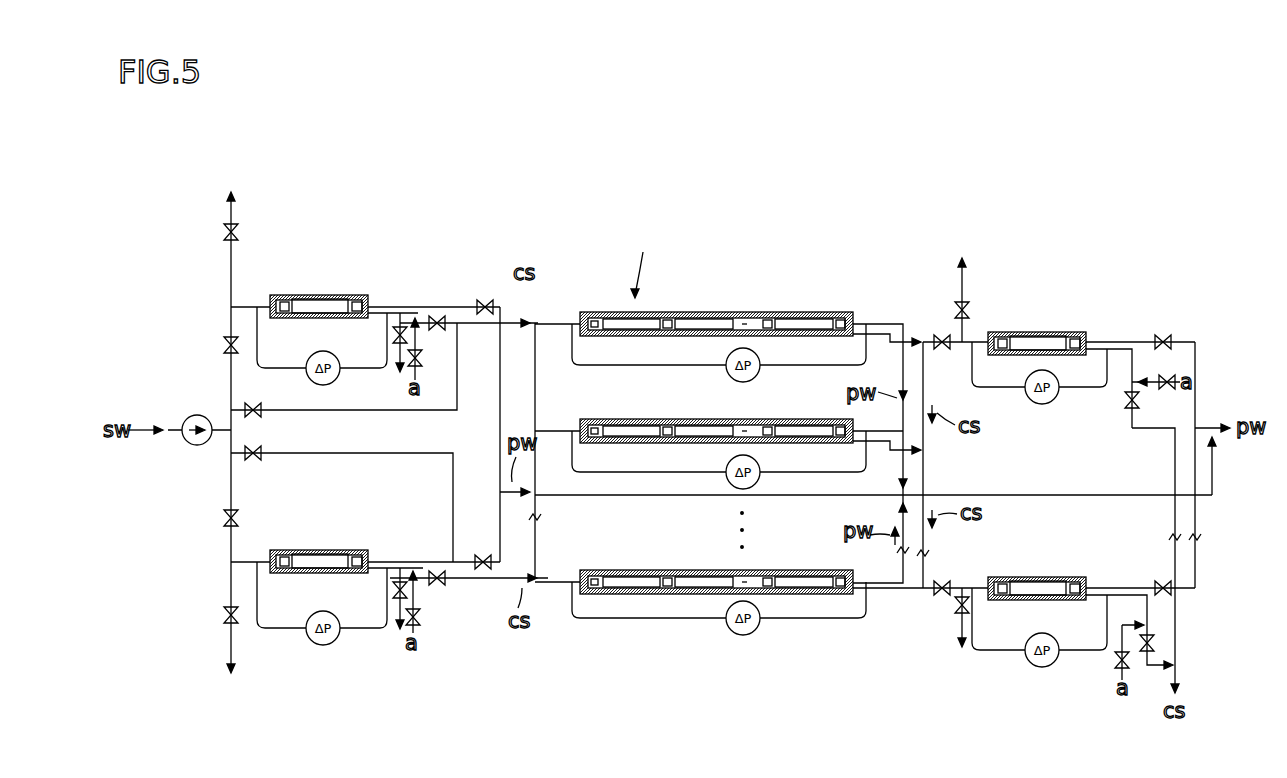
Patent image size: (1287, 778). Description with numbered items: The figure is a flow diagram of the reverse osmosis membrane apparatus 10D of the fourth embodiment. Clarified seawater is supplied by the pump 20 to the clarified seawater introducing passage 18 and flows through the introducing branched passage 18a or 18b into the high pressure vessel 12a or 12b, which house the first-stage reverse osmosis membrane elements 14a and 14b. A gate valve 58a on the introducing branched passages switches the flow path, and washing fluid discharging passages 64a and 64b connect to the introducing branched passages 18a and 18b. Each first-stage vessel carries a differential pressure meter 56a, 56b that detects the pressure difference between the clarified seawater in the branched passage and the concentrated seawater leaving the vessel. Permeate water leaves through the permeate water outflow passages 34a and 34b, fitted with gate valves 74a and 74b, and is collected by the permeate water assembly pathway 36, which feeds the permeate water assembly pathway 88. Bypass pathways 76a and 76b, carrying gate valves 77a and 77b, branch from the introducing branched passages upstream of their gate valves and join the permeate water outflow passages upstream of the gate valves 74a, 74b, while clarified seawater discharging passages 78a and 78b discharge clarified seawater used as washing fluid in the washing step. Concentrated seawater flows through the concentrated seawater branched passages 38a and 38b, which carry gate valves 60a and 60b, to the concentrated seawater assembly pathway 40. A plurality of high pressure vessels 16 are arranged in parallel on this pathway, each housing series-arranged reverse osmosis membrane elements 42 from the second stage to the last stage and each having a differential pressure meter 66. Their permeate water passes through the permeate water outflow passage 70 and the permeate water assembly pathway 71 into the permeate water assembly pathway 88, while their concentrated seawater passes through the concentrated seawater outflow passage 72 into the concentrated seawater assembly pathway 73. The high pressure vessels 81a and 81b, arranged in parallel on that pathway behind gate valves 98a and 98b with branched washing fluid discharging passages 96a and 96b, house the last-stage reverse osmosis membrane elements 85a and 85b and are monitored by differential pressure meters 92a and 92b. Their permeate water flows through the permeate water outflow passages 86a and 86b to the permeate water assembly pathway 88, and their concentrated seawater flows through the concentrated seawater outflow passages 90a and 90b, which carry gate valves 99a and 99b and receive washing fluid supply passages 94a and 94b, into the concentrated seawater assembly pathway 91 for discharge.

The reverse osmosis membrane apparatus 10D is at (645, 263).
The high pressure vessel 12a is at (319, 280).
The high pressure vessel 12b is at (319, 533).
The first-stage reverse osmosis membrane element 14a is at (326, 296).
The first-stage reverse osmosis membrane element 14b is at (326, 554).
The high pressure vessel 16 is at (780, 316).
The clarified seawater introducing passage 18 is at (228, 422).
The introducing branched passage 18a is at (242, 302).
The introducing branched passage 18b is at (245, 558).
The pump 20 is at (186, 419).
The permeate water outflow passage 34a is at (498, 398).
The permeate water outflow passage 34b is at (498, 523).
The permeate water assembly pathway 36 is at (658, 493).
The concentrated seawater branched passage 38a is at (402, 314).
The concentrated seawater branched passage 38b is at (470, 600).
The concentrated seawater assembly pathway 40 is at (541, 405).
The reverse osmosis membrane element 42 is at (694, 433).
The differential pressure meter 56a is at (310, 358).
The differential pressure meter 56b is at (310, 618).
The gate valve 58a is at (223, 350).
The gate valve 60a is at (437, 315).
The gate valve 60b is at (437, 586).
The washing fluid discharging passage 64a is at (228, 277).
The washing fluid discharging passage 64b is at (228, 592).
The differential pressure meter 66 is at (722, 358).
The permeate water outflow passage 70 is at (878, 318).
The permeate water assembly pathway 71 is at (900, 465).
The concentrated seawater outflow passage 72 is at (882, 345).
The concentrated seawater assembly pathway 73 is at (928, 468).
The gate valve 74a is at (484, 299).
The gate valve 74b is at (475, 558).
The bypass pathway 76a is at (300, 412).
The bypass pathway 76b is at (355, 452).
The gate valve 77a is at (260, 405).
The gate valve 77b is at (259, 459).
The clarified seawater discharging passage 78a is at (402, 365).
The clarified seawater discharging passage 78b is at (402, 615).
The high pressure vessel 81a is at (1048, 316).
The high pressure vessel 81b is at (1048, 561).
The last-stage reverse osmosis membrane element 85a is at (1032, 334).
The last-stage reverse osmosis membrane element 85b is at (1030, 580).
The permeate water outflow passage 86a is at (1178, 335).
The permeate water outflow passage 86b is at (1190, 594).
The permeate water assembly pathway 88 is at (1198, 428).
The concentrated seawater outflow passage 90a is at (1172, 440).
The concentrated seawater outflow passage 90b is at (1150, 588).
The concentrated seawater assembly pathway 91 is at (1180, 676).
The differential pressure meter 92a is at (1034, 405).
The differential pressure meter 92b is at (1034, 667).
The washing fluid supply passage 94a is at (1160, 380).
The washing fluid supply passage 94b is at (1118, 650).
The washing fluid discharging passage 96a is at (968, 275).
The washing fluid discharging passage 96b is at (960, 640).
The gate valve 98a is at (944, 352).
The gate valve 98b is at (945, 582).
The gate valve 99a is at (1128, 425).
The gate valve 99b is at (1145, 665).